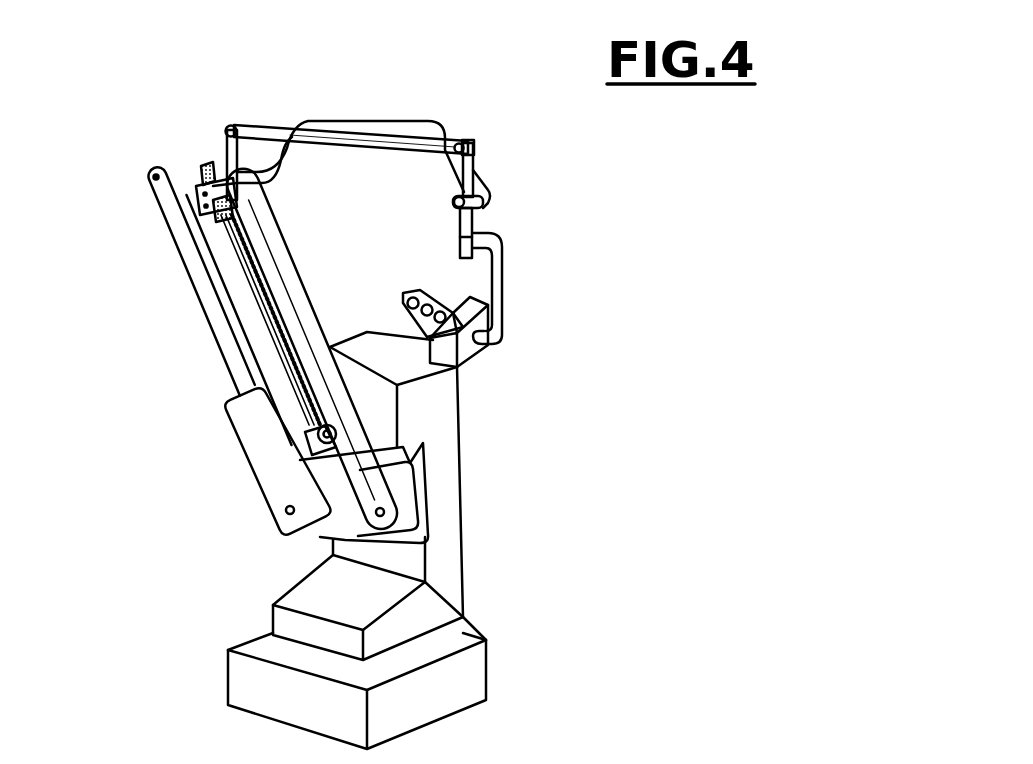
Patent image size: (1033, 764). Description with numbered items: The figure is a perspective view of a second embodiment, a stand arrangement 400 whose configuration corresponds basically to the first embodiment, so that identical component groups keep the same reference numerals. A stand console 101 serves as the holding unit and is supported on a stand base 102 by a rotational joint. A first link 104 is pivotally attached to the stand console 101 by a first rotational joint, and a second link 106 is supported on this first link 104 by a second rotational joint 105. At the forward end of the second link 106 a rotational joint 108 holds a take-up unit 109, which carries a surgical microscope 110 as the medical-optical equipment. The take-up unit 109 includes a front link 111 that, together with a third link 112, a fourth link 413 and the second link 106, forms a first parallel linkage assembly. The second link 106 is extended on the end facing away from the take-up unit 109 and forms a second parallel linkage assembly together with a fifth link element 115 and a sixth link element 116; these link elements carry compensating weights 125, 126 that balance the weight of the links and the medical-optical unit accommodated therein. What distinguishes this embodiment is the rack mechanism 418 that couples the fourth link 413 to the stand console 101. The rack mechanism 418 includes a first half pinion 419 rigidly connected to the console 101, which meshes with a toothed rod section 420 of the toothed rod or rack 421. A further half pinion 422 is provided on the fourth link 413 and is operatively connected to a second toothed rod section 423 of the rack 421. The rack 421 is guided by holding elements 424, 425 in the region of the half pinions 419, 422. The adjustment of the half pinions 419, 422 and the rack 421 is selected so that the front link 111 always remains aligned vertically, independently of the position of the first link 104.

The stand arrangement 400 is at (701, 217).
The stand console 101 is at (437, 600).
The stand base 102 is at (460, 688).
The first link 104 is at (272, 257).
The second rotational joint 105 is at (247, 163).
The second link 106 is at (408, 130).
The rotational joint 108 is at (490, 202).
The take-up unit 109 is at (473, 233).
The surgical microscope 110 is at (470, 348).
The front link 111 is at (474, 156).
The third link 112 is at (350, 154).
The fifth link element 115 is at (213, 335).
The sixth link element 116 is at (338, 540).
The compensating weight 125 is at (242, 423).
The compensating weight 126 is at (430, 517).
The fourth link 413 is at (226, 134).
The rack mechanism 418 is at (262, 344).
The first half pinion 419 is at (348, 408).
The toothed rod section 420 is at (320, 440).
The toothed rod or rack 421 is at (215, 220).
The half pinion 422 is at (207, 168).
The toothed rod section 423 is at (203, 167).
The holding element 424 is at (340, 450).
The holding element 425 is at (200, 182).